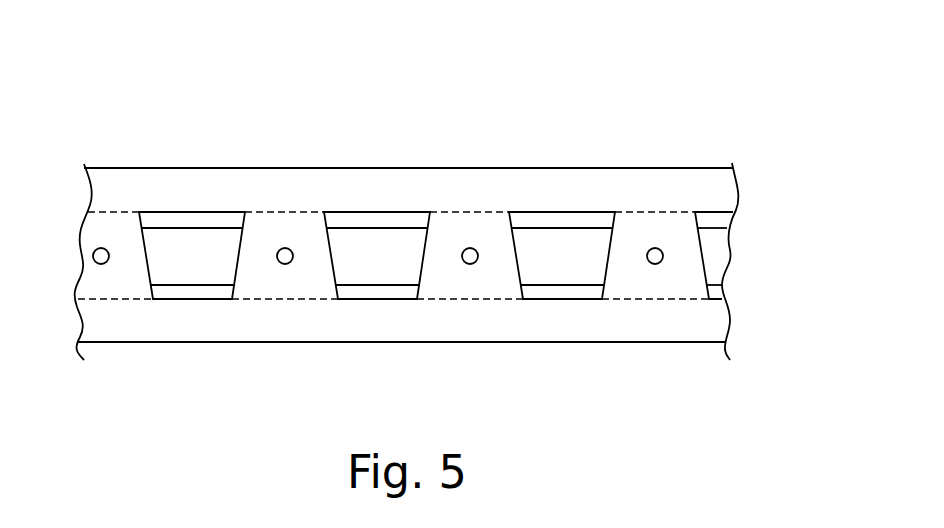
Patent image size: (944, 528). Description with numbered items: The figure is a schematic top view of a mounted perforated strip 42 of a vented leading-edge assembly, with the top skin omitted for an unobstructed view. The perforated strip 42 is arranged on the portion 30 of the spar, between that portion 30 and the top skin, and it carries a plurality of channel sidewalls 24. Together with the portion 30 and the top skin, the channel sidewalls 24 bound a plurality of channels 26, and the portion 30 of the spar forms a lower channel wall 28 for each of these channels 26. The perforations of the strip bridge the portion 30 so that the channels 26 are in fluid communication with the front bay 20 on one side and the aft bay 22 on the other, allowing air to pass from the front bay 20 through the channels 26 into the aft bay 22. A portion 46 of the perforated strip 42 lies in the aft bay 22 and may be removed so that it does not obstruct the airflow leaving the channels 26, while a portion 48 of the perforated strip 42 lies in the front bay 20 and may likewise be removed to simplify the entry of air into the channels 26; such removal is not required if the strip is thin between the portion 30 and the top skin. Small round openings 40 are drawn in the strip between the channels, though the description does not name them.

The front bay 20 is at (660, 163).
The aft bay 22 is at (655, 350).
The channel sidewalls 24 is at (446, 265).
The channels 26 is at (407, 224).
The lower channel wall 28 is at (379, 256).
The portion of the spar 30 is at (348, 226).
The hole 40 is at (470, 248).
The perforated strip 42 is at (281, 320).
The portion of the perforated strip in the aft bay 46 is at (705, 318).
The portion of the perforated strip in the front bay 48 is at (717, 193).